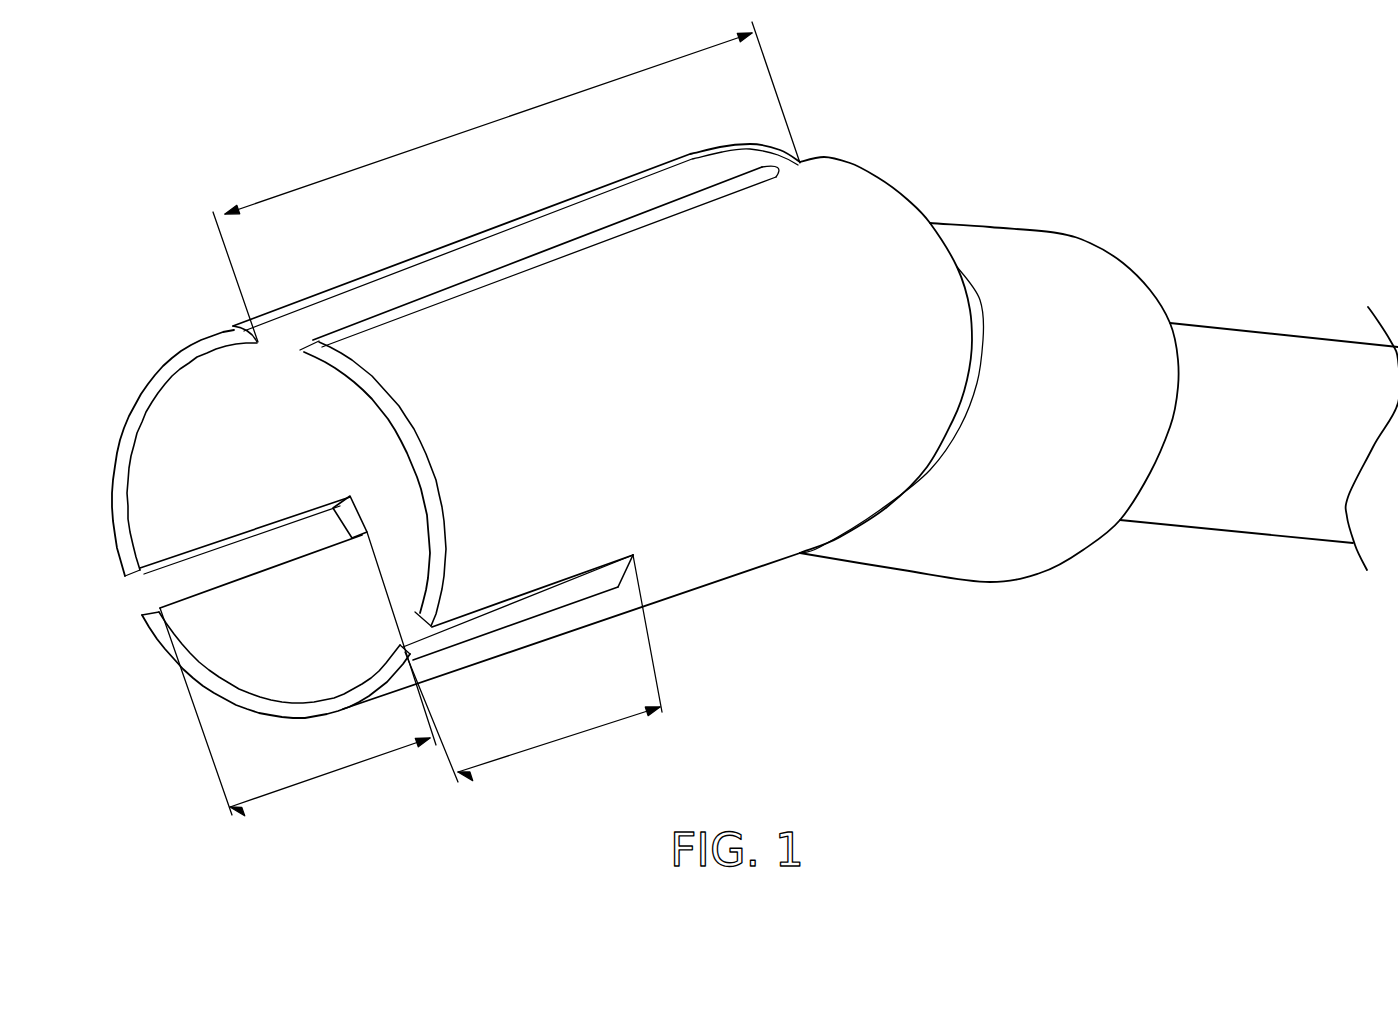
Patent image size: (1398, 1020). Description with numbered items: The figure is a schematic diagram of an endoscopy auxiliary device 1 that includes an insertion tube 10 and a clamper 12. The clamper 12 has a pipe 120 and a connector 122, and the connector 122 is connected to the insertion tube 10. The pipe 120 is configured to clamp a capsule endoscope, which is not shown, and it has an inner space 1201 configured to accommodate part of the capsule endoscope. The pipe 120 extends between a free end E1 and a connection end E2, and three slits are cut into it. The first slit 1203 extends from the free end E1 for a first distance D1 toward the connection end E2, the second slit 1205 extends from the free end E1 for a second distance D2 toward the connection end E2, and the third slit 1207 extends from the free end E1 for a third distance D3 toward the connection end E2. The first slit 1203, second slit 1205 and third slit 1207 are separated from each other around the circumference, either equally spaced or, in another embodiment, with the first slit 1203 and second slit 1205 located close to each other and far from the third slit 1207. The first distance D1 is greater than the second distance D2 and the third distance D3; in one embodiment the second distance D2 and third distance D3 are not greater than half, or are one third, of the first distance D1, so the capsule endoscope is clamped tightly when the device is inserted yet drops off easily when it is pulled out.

The endoscopy auxiliary device 1 is at (112, 103).
The insertion tube 10 is at (1250, 345).
The clamper 12 is at (885, 53).
The pipe 120 is at (660, 150).
The connector 122 is at (1043, 210).
The inner space 1201 is at (215, 501).
The first slit 1203 is at (341, 320).
The second slit 1205 is at (183, 577).
The third slit 1207 is at (462, 632).
The free end E1 is at (114, 446).
The connection end E2 is at (908, 178).
The first distance D1 is at (506, 182).
The second distance D2 is at (298, 674).
The third distance D3 is at (533, 668).